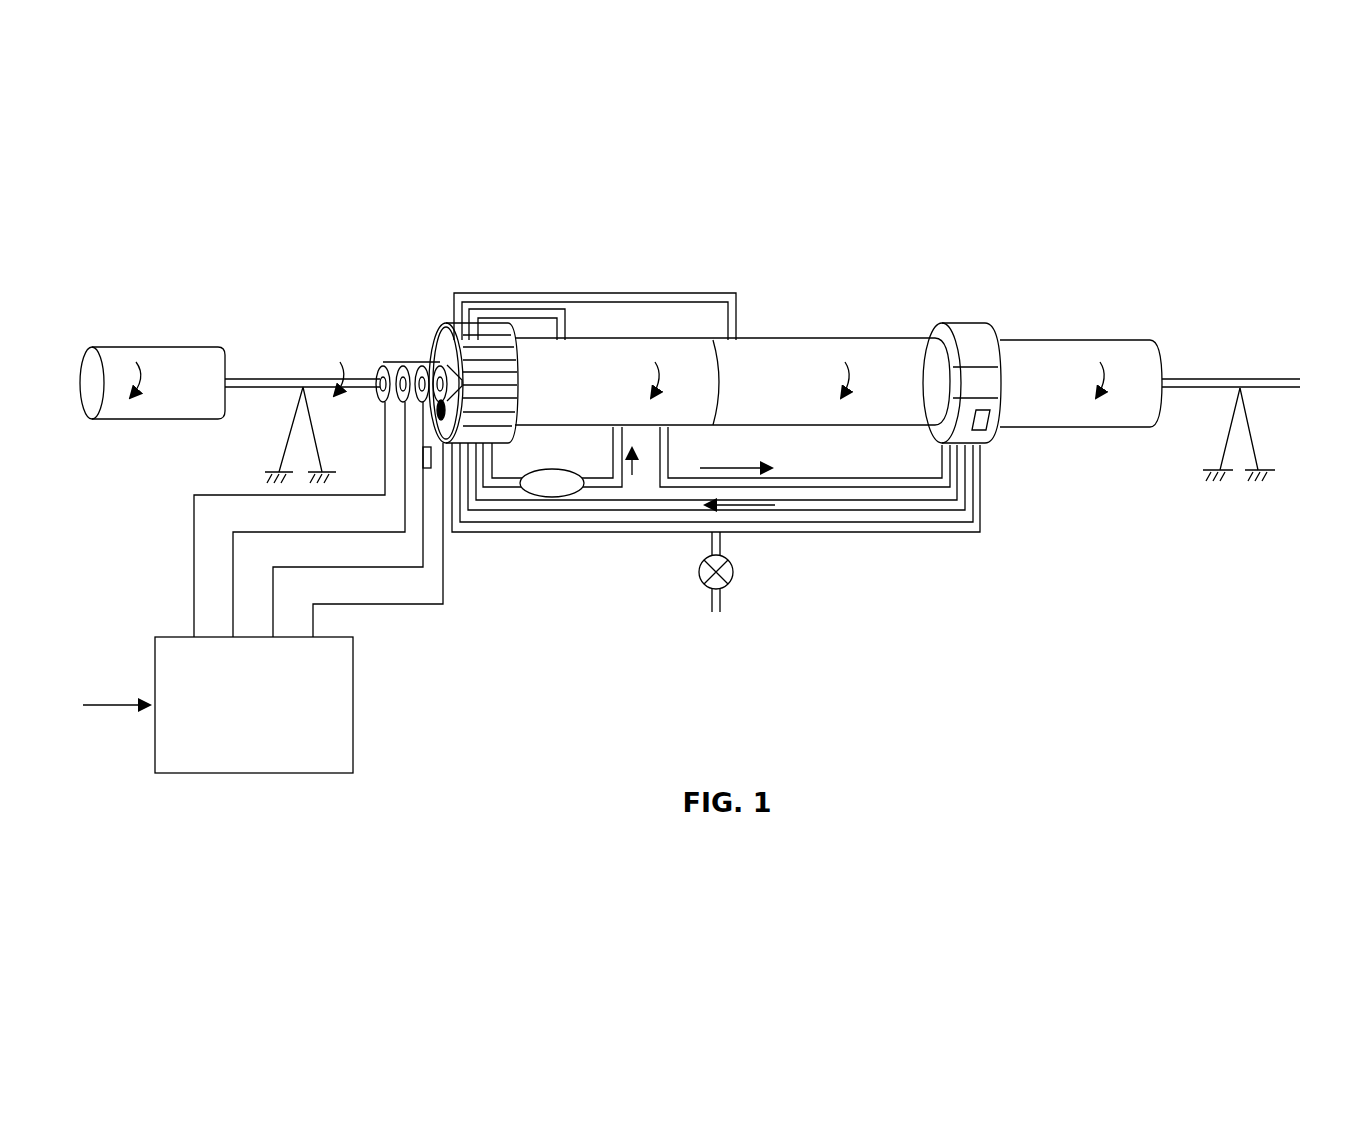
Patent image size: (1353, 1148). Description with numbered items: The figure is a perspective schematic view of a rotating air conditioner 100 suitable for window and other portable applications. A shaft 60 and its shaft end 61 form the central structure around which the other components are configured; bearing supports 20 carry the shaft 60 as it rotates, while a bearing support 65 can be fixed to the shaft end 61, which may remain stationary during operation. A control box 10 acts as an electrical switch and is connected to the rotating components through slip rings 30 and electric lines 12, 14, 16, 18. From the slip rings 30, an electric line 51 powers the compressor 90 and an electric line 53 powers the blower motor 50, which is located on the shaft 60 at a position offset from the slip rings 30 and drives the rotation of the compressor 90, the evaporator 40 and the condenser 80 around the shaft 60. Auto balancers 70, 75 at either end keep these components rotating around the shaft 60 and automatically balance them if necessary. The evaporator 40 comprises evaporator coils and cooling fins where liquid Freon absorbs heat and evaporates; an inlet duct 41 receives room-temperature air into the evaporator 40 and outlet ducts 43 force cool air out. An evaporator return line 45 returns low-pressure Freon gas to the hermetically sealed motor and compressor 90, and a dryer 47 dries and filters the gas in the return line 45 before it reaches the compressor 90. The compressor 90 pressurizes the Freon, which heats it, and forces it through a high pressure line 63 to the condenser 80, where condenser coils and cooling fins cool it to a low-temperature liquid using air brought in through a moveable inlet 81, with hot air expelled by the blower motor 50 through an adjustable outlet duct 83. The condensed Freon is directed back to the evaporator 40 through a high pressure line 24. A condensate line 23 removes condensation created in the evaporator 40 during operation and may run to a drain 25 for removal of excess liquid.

The rotating air conditioner 100 is at (348, 224).
The auto balancer 70 is at (127, 347).
The shaft 60 is at (294, 378).
The bearing supports 20 is at (288, 443).
The electric line 12 is at (233, 495).
The electric line 14 is at (270, 532).
The electric line 16 is at (310, 567).
The electric line 18 is at (348, 604).
The control box 10 is at (186, 775).
The slip rings 30 is at (383, 357).
The evaporator 40 is at (446, 337).
The inlet duct 41 is at (438, 397).
The outlet ducts 43 is at (500, 385).
The evaporator return line 45 is at (502, 478).
The dryer 47 is at (560, 472).
The electric line 51 is at (520, 310).
The electric line 53 is at (620, 294).
The compressor 90 is at (620, 340).
The blower motor 50 is at (822, 338).
The condenser 80 is at (960, 322).
The adjustable outlet duct 83 is at (995, 385).
The moveable inlet 81 is at (992, 425).
The auto balancer 75 is at (1112, 340).
The shaft end 61 is at (1276, 378).
The bearing support 65 is at (1255, 427).
The high pressure line 63 is at (805, 478).
The condensate line 23 is at (538, 532).
The high pressure line 24 is at (847, 510).
The drain 25 is at (735, 574).